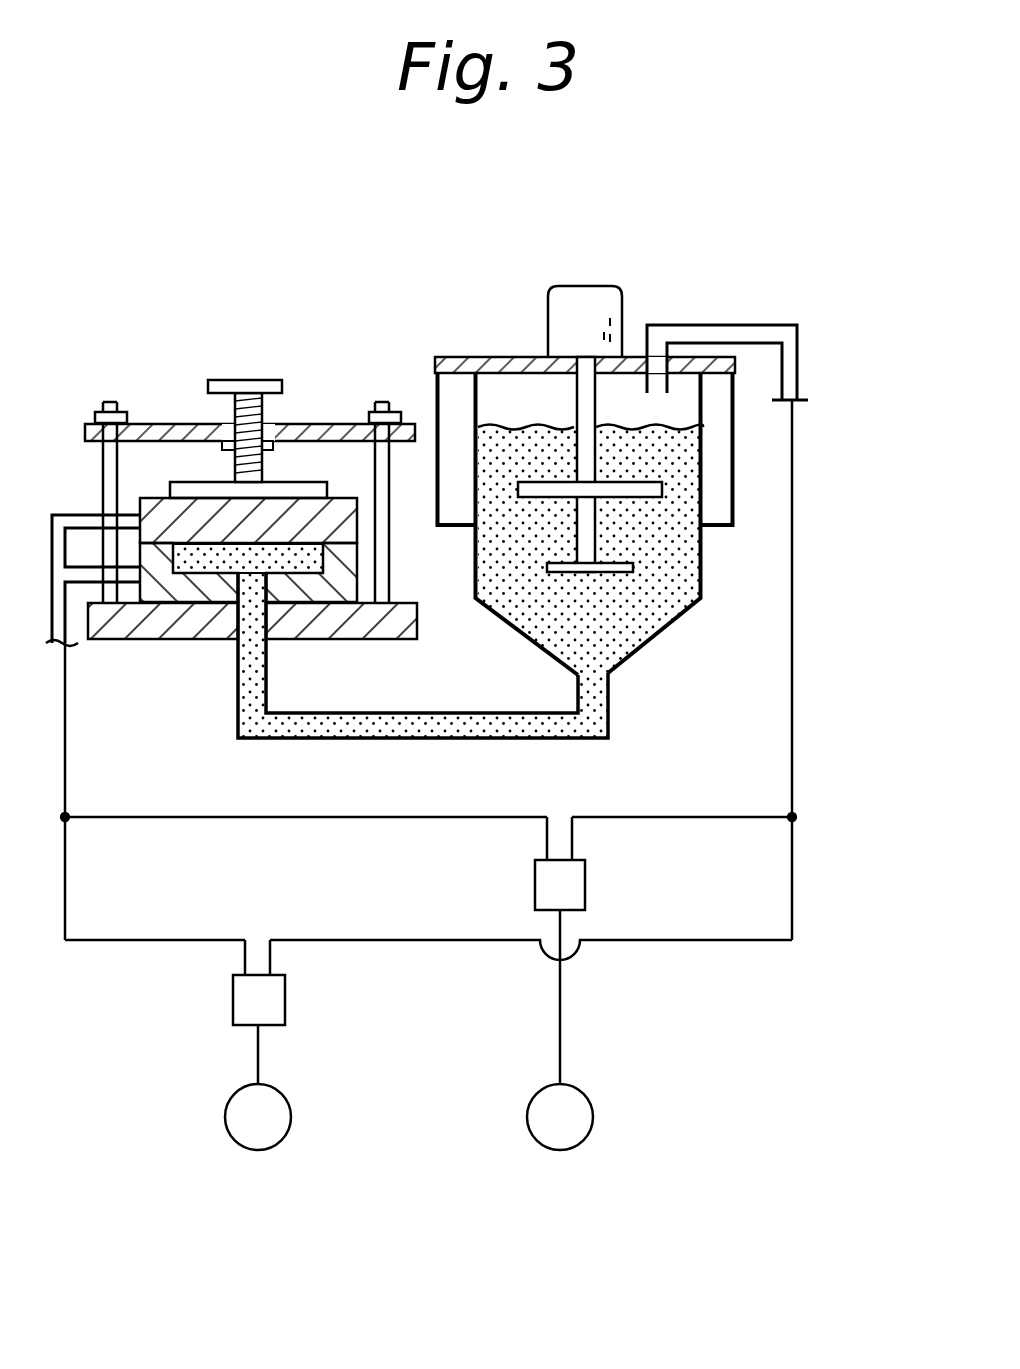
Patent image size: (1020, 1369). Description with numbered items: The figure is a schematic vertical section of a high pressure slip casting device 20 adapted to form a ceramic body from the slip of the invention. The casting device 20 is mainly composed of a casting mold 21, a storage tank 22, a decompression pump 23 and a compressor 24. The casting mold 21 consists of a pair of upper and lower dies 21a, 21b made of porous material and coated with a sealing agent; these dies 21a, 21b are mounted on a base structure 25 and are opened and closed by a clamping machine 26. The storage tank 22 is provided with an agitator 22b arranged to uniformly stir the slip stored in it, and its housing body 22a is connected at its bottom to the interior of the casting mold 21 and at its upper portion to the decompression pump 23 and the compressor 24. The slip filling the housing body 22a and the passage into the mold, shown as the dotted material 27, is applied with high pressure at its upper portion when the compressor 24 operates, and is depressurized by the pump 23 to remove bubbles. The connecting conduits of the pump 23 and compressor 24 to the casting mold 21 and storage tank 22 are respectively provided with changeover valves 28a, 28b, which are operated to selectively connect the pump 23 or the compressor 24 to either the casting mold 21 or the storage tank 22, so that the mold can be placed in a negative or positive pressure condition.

The high pressure slip casting device 20 is at (752, 299).
The casting mold 21 is at (192, 603).
The upper die 21a is at (338, 513).
The lower die 21b is at (337, 590).
The storage tank 22 is at (703, 467).
The housing body 22a is at (708, 575).
The agitator 22b is at (590, 400).
The decompression pump 23 is at (280, 1117).
The compressor 24 is at (580, 1112).
The base structure 25 is at (128, 638).
The clamping machine 26 is at (252, 377).
The slurry 27 is at (632, 625).
The changeover valve 28a is at (277, 990).
The changeover valve 28b is at (573, 885).